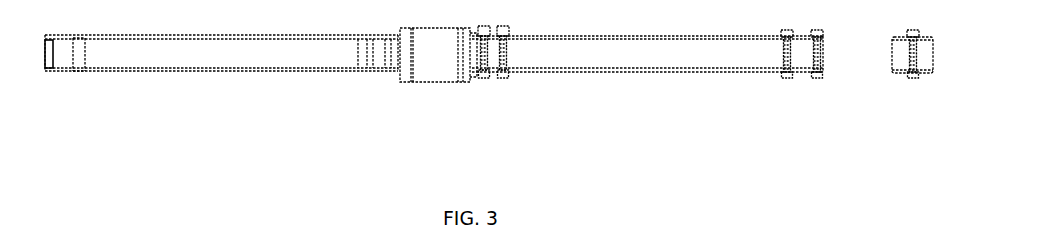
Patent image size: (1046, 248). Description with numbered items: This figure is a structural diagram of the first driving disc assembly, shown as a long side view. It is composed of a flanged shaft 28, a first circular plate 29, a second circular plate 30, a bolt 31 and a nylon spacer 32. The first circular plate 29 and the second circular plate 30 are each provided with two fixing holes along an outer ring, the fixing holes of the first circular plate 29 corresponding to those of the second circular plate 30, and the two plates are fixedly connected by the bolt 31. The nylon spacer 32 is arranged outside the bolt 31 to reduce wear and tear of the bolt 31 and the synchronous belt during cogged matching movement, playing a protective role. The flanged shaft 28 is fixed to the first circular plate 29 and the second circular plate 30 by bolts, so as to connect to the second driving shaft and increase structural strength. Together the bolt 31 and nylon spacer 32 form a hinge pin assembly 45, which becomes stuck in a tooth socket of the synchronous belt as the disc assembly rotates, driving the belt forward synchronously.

The flanged shaft 28 is at (403, 78).
The first circular plate 29 is at (211, 72).
The second circular plate 30 is at (579, 39).
The bolt 31 is at (818, 78).
The nylon spacer 32 is at (781, 75).
The hinge pin assembly 45 is at (915, 78).